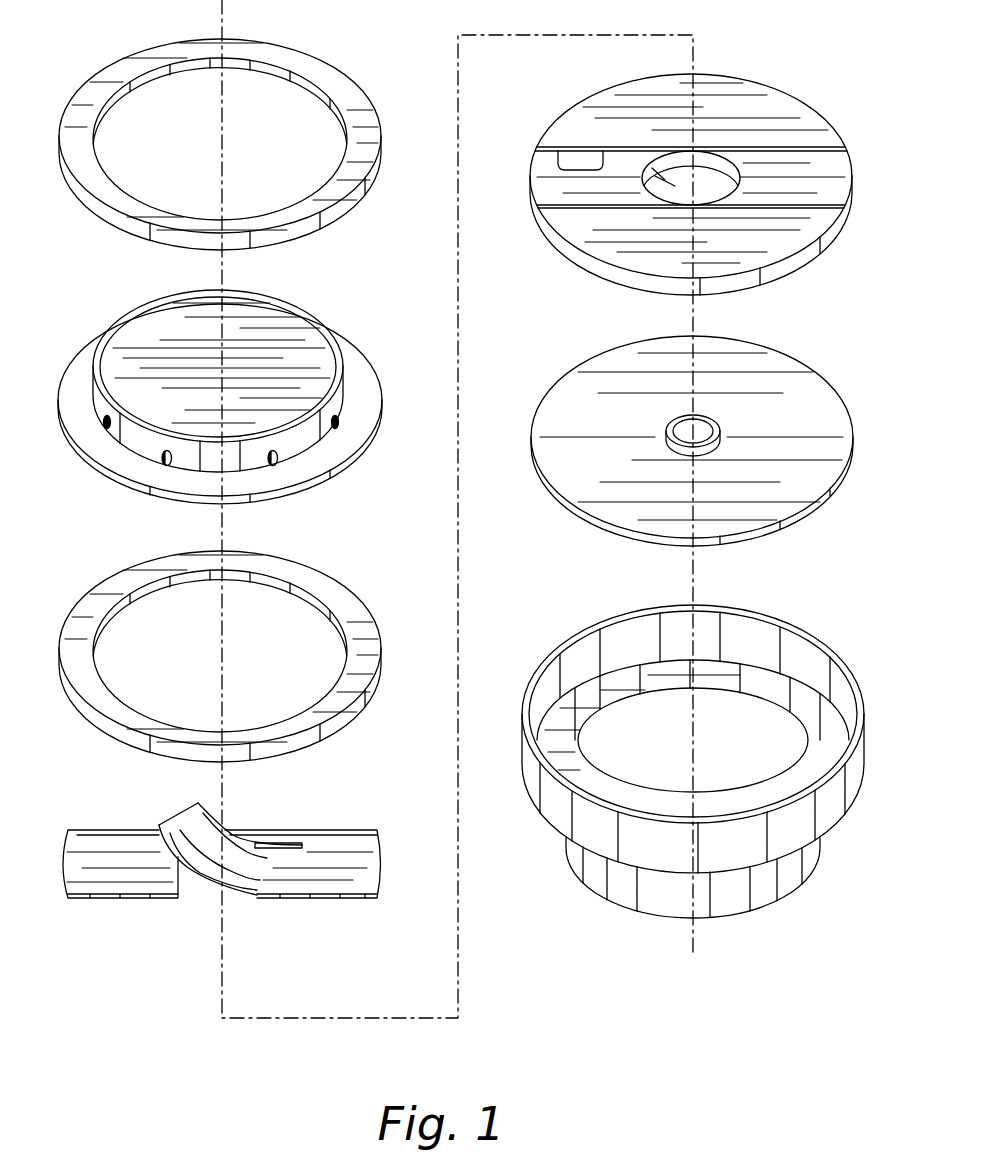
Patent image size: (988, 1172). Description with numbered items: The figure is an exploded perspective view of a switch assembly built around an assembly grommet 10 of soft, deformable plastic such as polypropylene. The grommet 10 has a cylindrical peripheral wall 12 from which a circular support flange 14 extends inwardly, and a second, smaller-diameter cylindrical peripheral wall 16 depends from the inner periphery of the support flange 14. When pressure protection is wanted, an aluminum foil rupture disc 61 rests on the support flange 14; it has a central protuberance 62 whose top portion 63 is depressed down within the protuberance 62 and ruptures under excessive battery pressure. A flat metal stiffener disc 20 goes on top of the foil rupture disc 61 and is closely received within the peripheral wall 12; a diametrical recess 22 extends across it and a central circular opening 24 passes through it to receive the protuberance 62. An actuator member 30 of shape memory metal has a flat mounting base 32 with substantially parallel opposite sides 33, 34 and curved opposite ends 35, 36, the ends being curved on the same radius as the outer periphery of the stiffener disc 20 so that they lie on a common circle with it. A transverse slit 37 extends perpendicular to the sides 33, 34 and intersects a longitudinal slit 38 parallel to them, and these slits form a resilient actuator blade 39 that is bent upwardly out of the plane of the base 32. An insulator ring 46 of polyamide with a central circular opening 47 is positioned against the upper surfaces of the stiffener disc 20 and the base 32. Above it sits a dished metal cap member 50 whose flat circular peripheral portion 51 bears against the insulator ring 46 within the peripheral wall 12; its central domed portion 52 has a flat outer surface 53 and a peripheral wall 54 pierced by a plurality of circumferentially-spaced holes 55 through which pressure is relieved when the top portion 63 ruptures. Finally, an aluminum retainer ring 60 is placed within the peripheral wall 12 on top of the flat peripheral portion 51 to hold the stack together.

The assembly grommet 10 is at (704, 762).
The cylindrical peripheral wall 12 is at (768, 645).
The circular support flange 14 is at (600, 700).
The cylindrical peripheral wall 16 is at (773, 882).
The stiffener disc 20 is at (692, 181).
The diametrical recess 22 is at (558, 160).
The central circular opening 24 is at (650, 170).
The actuator member 30 is at (226, 893).
The flat mounting base 32 is at (118, 895).
The side 33 is at (337, 833).
The side 34 is at (313, 897).
The curved end 35 is at (62, 863).
The curved end 36 is at (383, 862).
The transverse slit 37 is at (180, 883).
The longitudinal slit 38 is at (277, 845).
The resilient actuator blade 39 is at (180, 835).
The insulator ring 46 is at (222, 638).
The central circular opening 47 is at (130, 603).
The cap member 50 is at (226, 394).
The flat circular peripheral portion 51 is at (340, 450).
The central domed portion 52 is at (210, 367).
The flat outer surface 53 is at (178, 340).
The peripheral wall 54 is at (123, 440).
The holes 55 is at (168, 460).
The retainer ring 60 is at (312, 48).
The foil rupture disc 61 is at (699, 430).
The central protuberance 62 is at (657, 442).
The top portion 63 is at (697, 427).